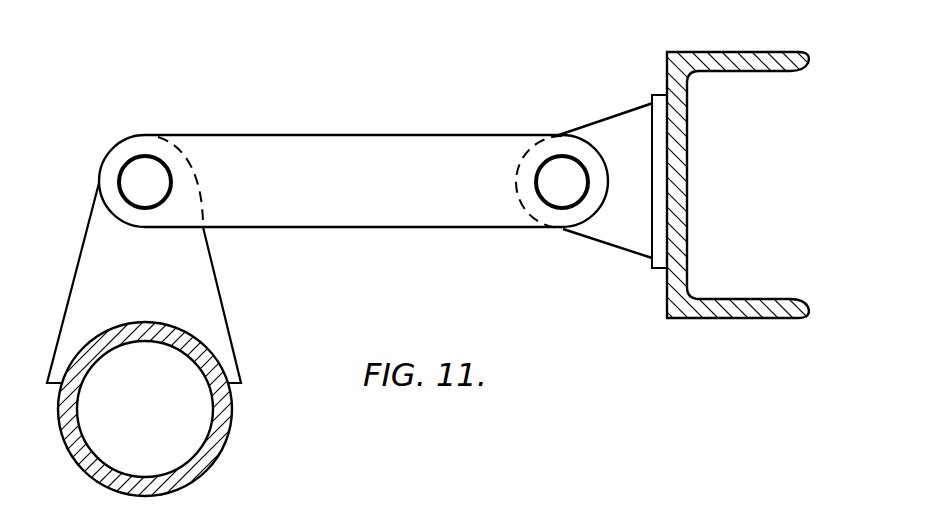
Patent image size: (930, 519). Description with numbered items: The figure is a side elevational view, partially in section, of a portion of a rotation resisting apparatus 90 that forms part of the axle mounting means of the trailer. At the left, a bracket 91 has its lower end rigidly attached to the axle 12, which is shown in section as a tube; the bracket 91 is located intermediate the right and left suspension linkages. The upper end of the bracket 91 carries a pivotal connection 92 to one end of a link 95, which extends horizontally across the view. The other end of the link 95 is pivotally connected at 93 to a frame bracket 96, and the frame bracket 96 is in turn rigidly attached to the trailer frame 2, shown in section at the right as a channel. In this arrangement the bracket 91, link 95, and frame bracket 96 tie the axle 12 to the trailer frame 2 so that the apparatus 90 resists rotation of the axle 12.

The trailer frame 2 is at (705, 48).
The axle 12 is at (213, 442).
The rotation resisting apparatus 90 is at (202, 298).
The bracket 91 is at (91, 207).
The pivotal connection 92 is at (148, 162).
The pivotal connection 93 is at (562, 162).
The link 95 is at (360, 155).
The frame bracket 96 is at (610, 231).